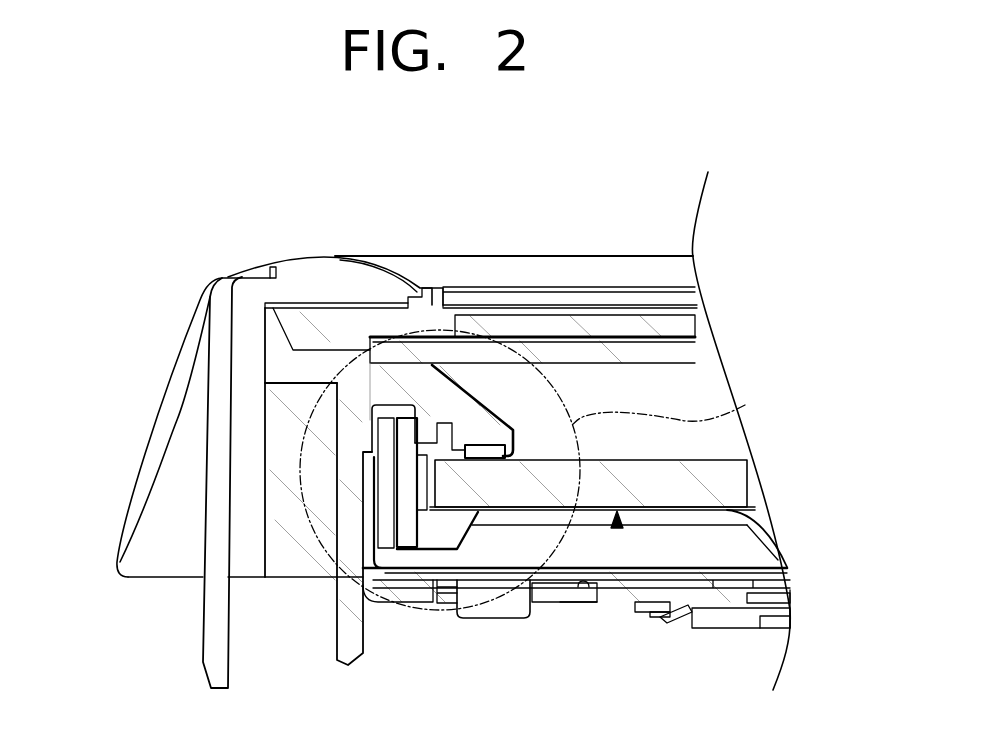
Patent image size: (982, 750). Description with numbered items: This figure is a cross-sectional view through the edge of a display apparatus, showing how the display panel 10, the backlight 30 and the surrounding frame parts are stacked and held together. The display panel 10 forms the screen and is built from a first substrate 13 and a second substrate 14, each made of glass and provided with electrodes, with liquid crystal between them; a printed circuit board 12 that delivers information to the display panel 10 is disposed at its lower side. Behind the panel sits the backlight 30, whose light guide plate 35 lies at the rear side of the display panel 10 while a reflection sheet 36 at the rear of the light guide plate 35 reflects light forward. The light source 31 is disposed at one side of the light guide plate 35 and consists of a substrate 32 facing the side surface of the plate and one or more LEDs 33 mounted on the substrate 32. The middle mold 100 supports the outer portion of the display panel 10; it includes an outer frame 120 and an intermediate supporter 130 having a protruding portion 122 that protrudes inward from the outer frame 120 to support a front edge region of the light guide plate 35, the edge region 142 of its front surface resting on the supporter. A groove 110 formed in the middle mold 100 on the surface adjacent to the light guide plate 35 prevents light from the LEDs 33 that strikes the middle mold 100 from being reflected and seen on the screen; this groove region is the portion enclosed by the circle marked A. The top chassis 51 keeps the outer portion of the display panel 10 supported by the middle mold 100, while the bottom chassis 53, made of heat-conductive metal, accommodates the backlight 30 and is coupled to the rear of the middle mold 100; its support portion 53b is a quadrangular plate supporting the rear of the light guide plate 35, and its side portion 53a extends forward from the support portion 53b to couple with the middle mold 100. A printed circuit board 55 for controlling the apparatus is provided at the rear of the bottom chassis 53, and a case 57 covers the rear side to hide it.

The display panel 10 is at (532, 255).
The printed circuit board 12 is at (563, 355).
The first substrate 13 is at (603, 338).
The second substrate 14 is at (655, 323).
The backlight 30 is at (617, 530).
The light source 31 is at (224, 482).
The substrate 32 is at (407, 477).
The LED 33 is at (423, 495).
The light guide plate 35 is at (712, 488).
The reflection sheet 36 is at (668, 509).
The top chassis 51 is at (325, 272).
The bottom chassis 53 is at (420, 561).
The side portion 53a is at (390, 533).
The support portion 53b is at (460, 551).
The printed circuit board 55 is at (583, 593).
The case 57 is at (550, 607).
The middle mold 100 is at (308, 365).
The groove 110 is at (432, 413).
The outer frame 120 is at (342, 638).
The protruding portion 122 is at (493, 417).
The intermediate supporter 130 is at (473, 413).
The edge region 142 is at (468, 470).
The region A is at (536, 470).